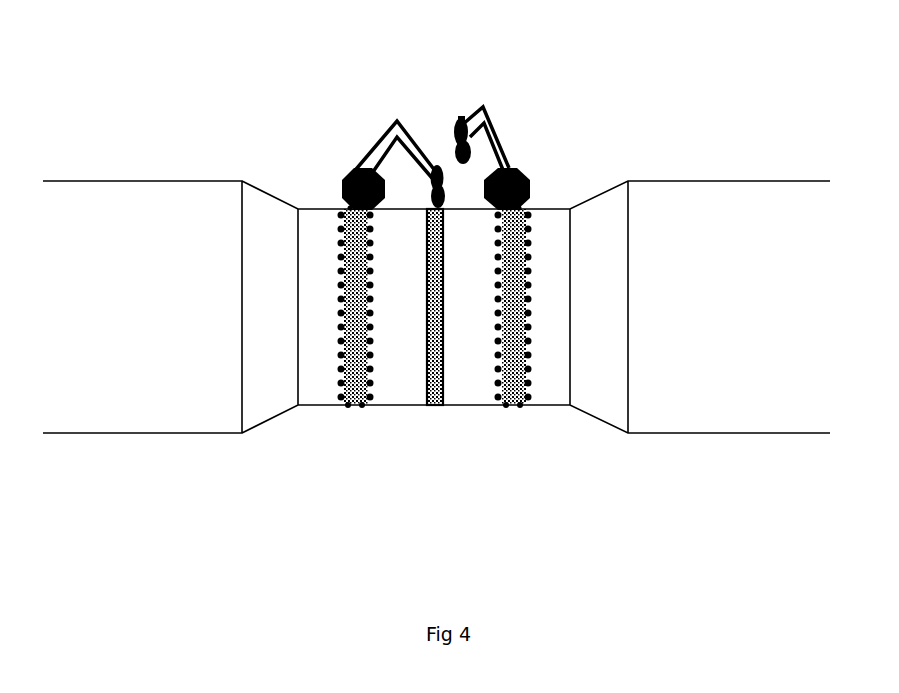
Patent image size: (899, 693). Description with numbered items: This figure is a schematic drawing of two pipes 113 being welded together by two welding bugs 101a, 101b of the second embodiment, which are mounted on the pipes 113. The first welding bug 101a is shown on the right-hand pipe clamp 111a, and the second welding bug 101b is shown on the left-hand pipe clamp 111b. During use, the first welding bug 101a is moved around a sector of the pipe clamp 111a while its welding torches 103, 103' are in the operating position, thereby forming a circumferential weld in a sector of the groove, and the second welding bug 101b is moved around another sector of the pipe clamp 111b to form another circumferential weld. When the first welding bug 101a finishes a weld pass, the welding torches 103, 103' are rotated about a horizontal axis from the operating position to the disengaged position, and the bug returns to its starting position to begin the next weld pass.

The first welding bug 101a is at (528, 173).
The second welding bug 101b is at (343, 178).
The welding torch 103 is at (473, 65).
The welding torch 103' is at (436, 114).
The pipe clamp 111a is at (513, 398).
The pipe clamp 111b is at (357, 398).
The pipes 113 is at (741, 362).